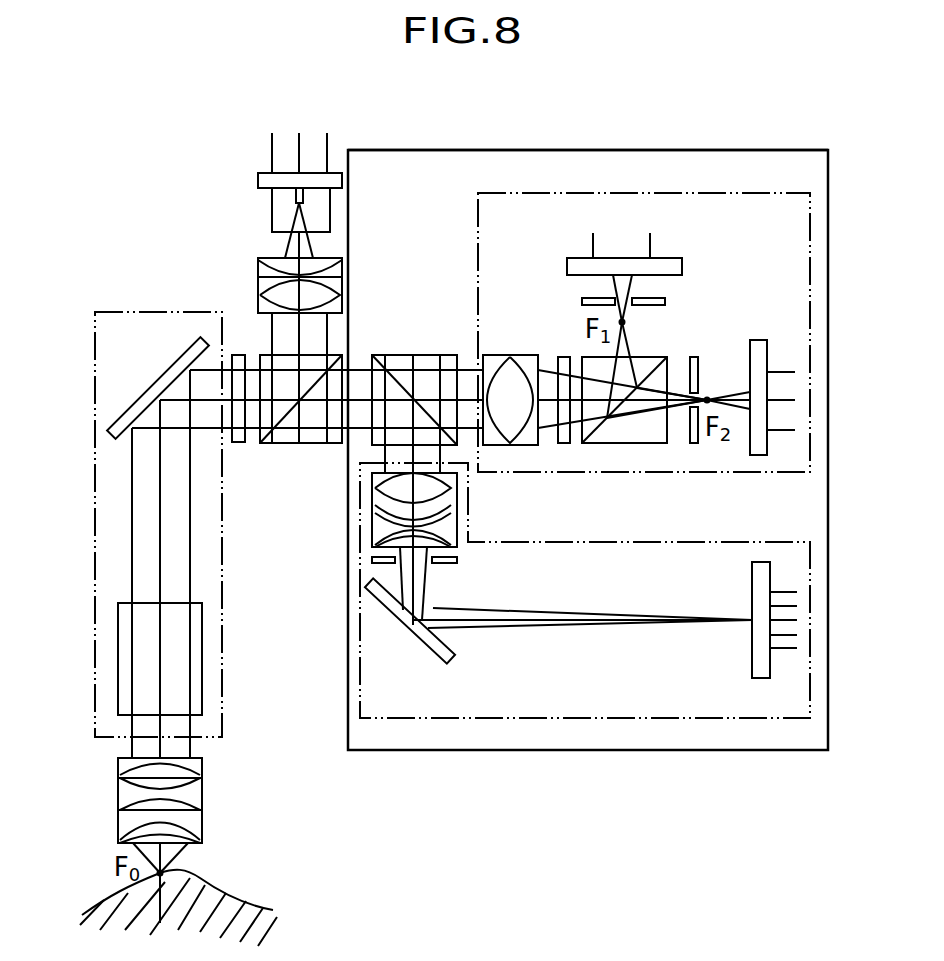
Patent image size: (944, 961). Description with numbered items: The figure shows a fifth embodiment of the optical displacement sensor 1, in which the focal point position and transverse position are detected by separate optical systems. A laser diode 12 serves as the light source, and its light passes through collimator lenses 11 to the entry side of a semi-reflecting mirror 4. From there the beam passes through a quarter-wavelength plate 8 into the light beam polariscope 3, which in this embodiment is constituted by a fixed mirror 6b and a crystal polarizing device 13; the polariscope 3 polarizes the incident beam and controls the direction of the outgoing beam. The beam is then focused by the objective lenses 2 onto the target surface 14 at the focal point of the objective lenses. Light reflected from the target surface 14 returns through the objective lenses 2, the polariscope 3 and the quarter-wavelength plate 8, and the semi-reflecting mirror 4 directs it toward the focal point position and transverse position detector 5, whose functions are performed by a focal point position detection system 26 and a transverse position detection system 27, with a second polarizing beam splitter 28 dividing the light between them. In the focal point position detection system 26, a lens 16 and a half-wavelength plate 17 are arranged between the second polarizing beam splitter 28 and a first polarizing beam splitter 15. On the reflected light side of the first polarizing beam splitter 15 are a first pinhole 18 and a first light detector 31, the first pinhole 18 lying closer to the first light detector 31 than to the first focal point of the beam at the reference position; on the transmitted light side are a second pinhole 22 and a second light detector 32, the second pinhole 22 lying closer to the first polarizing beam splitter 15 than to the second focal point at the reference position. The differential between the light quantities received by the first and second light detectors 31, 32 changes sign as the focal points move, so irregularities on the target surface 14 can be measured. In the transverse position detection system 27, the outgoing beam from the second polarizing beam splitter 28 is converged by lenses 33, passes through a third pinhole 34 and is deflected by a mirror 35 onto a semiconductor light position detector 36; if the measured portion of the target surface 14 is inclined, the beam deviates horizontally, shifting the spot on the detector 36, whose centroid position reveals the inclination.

The optical displacement sensor 1 is at (580, 138).
The objective lenses 2 is at (202, 808).
The light beam polariscope 3 is at (128, 312).
The semi-reflecting mirror 4 is at (303, 443).
The focal point position and transverse position detector 5 is at (690, 150).
The fixed mirror 6b is at (183, 352).
The quarter-wavelength plate 8 is at (240, 443).
The collimator lenses 11 is at (258, 283).
The laser diode 12 is at (270, 210).
The crystal polarizing device 13 is at (202, 670).
The target surface 14 is at (236, 900).
The first polarizing beam splitter 15 is at (645, 447).
The lens 16 is at (505, 355).
The half-wavelength plate 17 is at (565, 447).
The first pinhole 18 is at (665, 302).
The second pinhole 22 is at (694, 447).
The focal point position detection system 26 is at (478, 222).
The transverse position detection system 27 is at (468, 720).
The second polarizing beam splitter 28 is at (437, 355).
The first light detector 31 is at (672, 258).
The second light detector 32 is at (767, 352).
The lenses 33 is at (457, 510).
The third pinhole 34 is at (457, 560).
The mirror 35 is at (452, 657).
The semiconductor light position detector 36 is at (752, 578).